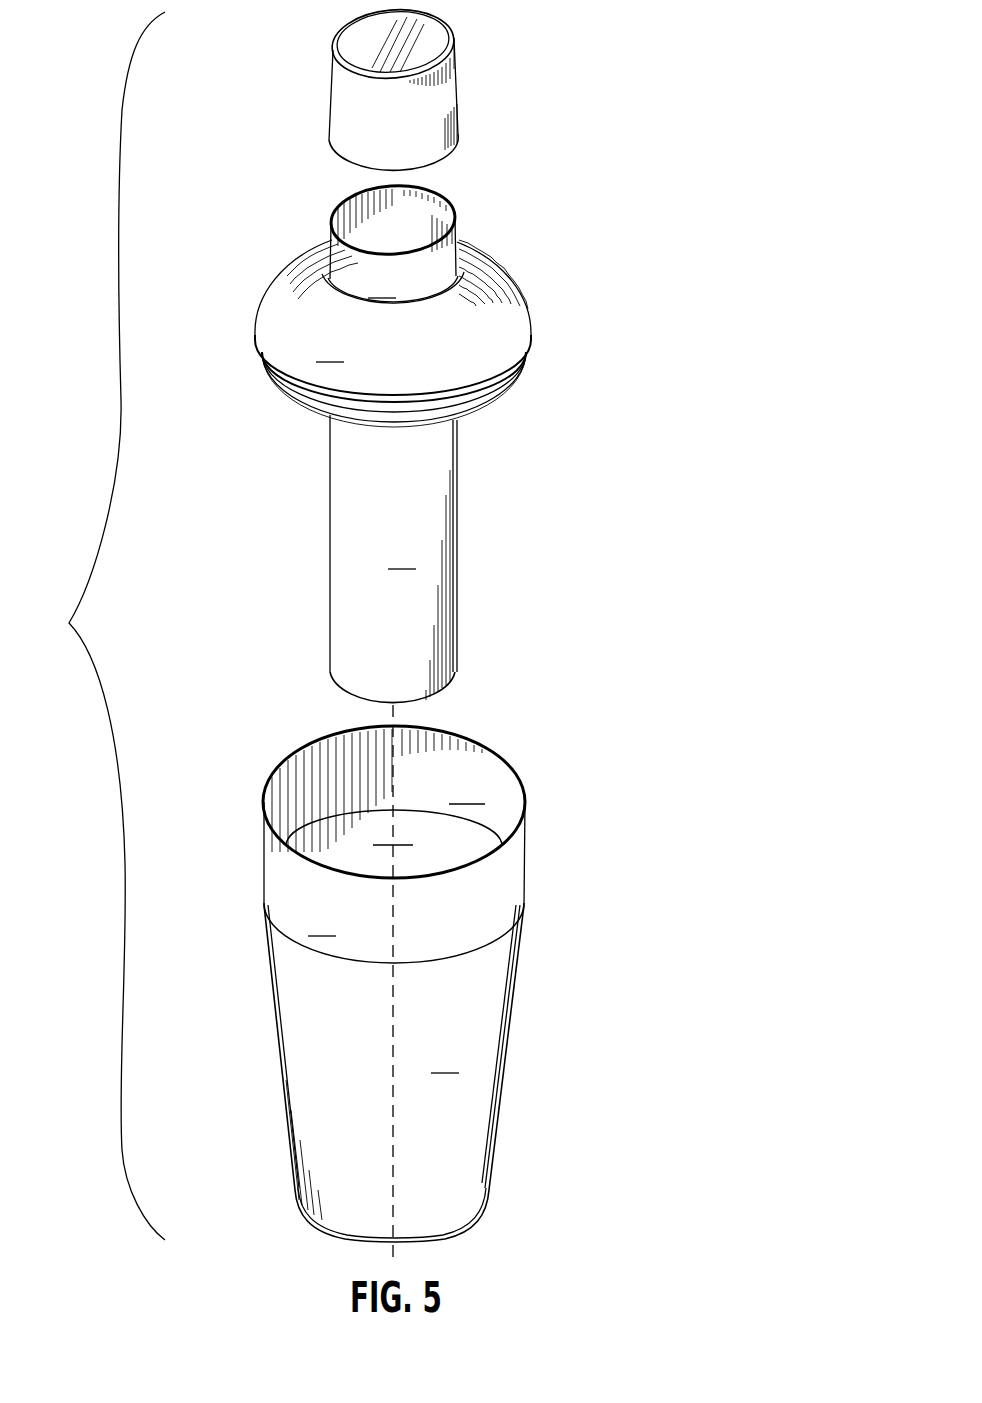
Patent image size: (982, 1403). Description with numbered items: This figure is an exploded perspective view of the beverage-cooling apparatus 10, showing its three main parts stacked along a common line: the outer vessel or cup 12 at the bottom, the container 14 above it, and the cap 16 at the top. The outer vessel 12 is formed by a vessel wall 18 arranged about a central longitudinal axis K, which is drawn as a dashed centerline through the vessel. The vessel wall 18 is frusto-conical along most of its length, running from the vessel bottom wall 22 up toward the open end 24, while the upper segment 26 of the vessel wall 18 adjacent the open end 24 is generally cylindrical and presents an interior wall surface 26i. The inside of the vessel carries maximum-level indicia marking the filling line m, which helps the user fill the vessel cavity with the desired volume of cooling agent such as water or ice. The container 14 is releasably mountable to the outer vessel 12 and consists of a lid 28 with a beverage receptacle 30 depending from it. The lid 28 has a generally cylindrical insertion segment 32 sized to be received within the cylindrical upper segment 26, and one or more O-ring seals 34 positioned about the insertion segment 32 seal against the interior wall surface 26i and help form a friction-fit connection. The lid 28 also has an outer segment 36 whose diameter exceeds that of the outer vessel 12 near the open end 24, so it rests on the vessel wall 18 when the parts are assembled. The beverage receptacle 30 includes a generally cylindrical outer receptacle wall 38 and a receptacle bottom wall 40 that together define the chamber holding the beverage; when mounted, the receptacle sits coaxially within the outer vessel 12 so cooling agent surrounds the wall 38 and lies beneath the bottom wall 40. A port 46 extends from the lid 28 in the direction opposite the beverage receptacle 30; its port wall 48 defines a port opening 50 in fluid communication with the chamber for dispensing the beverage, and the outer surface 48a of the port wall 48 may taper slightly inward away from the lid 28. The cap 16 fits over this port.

The apparatus 10 is at (100, 626).
The outer vessel 12 is at (407, 986).
The container 14 is at (406, 419).
The cap 16 is at (462, 74).
The vessel wall 18 is at (394, 1062).
The vessel bottom wall 22 is at (343, 1240).
The open end 24 is at (302, 750).
The upper segment 26 is at (394, 870).
The interior wall surface 26i is at (378, 790).
The MAX filling line m is at (313, 836).
The central longitudinal axis K is at (393, 910).
The lid 28 is at (406, 282).
The beverage receptacle 30 is at (391, 561).
The insertion segment 32 is at (277, 383).
The O-ring seals 34 is at (498, 390).
The outer segment 36 is at (393, 317).
The outer receptacle wall 38 is at (393, 557).
The receptacle bottom wall 40 is at (428, 703).
The port 46 is at (453, 262).
The port wall 48 is at (341, 216).
The outer surface of the port wall 48a is at (331, 236).
The port opening 50 is at (365, 202).